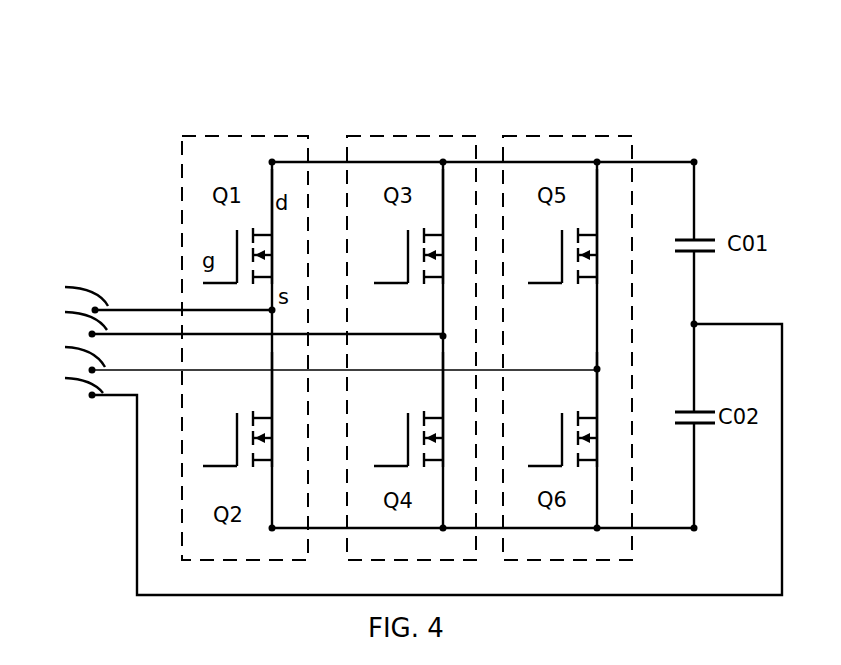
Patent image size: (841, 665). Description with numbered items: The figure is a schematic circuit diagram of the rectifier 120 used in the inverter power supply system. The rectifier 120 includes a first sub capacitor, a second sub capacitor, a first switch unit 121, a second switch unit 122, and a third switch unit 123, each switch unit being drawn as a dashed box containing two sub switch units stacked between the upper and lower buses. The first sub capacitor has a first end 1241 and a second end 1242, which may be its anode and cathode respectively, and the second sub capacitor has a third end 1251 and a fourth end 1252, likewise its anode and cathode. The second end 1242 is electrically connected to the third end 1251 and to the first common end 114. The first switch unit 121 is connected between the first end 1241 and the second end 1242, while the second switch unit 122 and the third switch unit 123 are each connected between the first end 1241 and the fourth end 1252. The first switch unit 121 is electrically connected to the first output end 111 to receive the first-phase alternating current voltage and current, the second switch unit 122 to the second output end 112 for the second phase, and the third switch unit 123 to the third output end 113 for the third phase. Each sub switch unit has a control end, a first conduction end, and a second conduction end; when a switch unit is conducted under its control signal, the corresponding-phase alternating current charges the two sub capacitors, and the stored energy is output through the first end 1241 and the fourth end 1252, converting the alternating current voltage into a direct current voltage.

The rectifier 120 is at (452, 46).
The first switch unit 121 is at (227, 136).
The second switch unit 122 is at (380, 136).
The third switch unit 123 is at (537, 136).
The first output end 111 is at (151, 284).
The second output end 112 is at (232, 317).
The third output end 113 is at (309, 350).
The first common end 114 is at (402, 459).
The first end 1241 is at (694, 218).
The second end 1242 is at (694, 304).
The third end 1251 is at (694, 385).
The fourth end 1252 is at (694, 470).